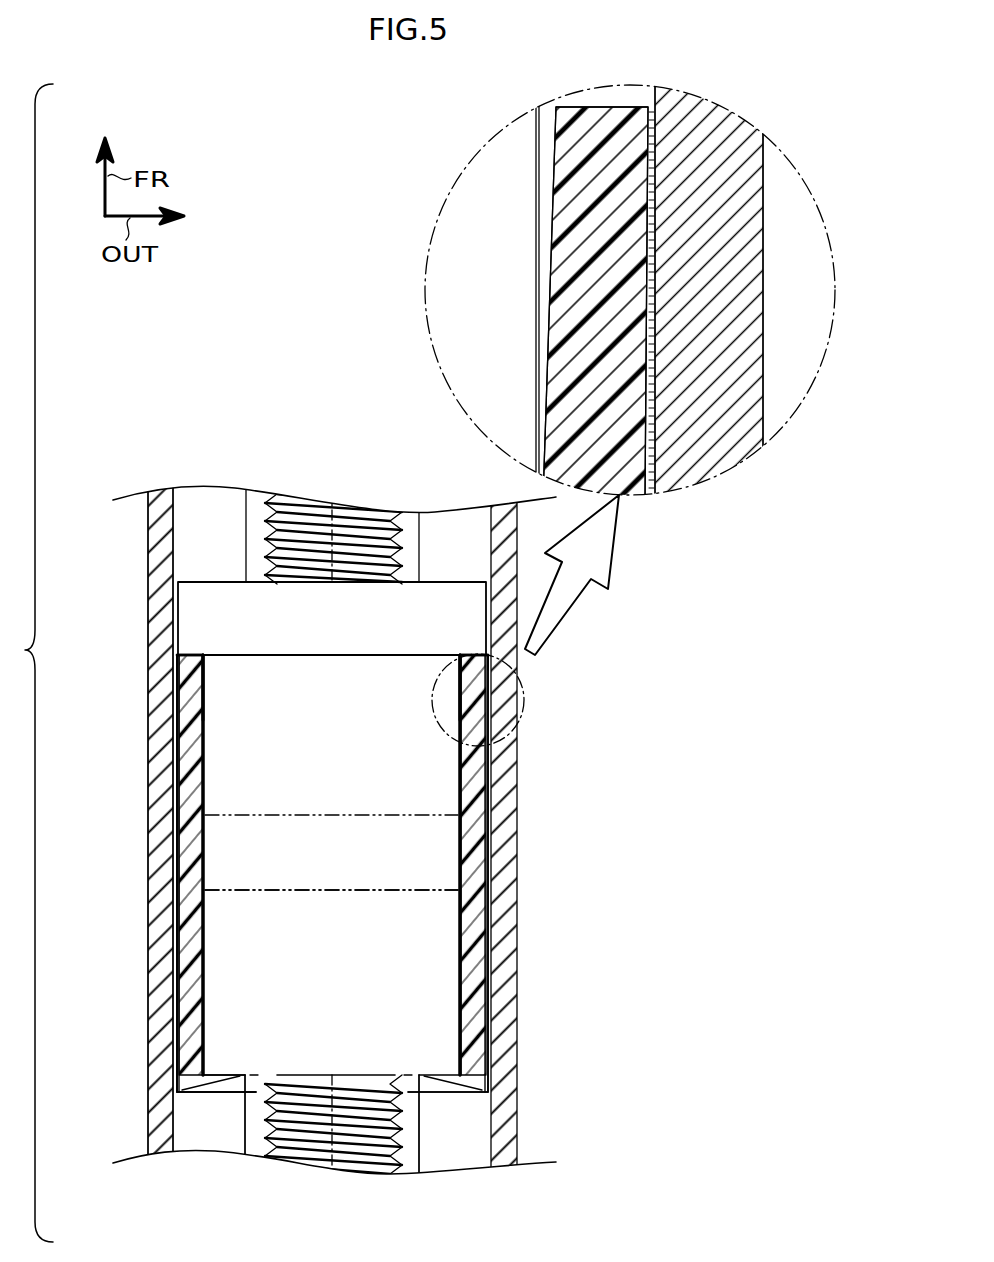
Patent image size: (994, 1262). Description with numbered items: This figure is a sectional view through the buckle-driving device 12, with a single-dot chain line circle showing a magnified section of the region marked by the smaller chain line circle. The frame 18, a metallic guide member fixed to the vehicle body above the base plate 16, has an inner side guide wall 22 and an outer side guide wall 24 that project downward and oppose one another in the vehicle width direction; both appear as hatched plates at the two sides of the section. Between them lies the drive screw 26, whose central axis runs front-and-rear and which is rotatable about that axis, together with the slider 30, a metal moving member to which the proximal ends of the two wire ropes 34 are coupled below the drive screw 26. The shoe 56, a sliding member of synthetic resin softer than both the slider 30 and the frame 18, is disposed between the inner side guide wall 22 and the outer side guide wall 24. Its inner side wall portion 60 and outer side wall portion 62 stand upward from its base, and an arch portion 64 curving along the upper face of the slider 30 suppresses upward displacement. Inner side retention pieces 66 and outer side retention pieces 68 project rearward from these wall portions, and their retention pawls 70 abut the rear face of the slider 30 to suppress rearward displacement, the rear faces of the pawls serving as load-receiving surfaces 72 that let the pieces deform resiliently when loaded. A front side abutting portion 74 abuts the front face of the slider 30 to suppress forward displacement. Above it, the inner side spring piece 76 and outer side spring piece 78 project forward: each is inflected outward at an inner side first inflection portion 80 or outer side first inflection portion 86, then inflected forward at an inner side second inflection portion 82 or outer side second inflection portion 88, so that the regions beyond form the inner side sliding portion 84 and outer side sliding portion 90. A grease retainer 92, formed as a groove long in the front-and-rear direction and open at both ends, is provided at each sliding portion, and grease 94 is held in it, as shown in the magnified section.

The buckle-driving device 12 is at (482, 733).
The base plate 16 is at (427, 1164).
The frame 18 is at (482, 733).
The inner side guide wall 22 is at (503, 1040).
The outer side guide wall 24 is at (170, 1040).
The drive screw 26 is at (360, 1152).
The slider 30 is at (428, 945).
The wire rope 34 is at (245, 1142).
The shoe 56 is at (178, 1062).
The inner side wall portion 60 is at (473, 857).
The outer side wall portion 62 is at (193, 855).
The arch portion 64 is at (331, 905).
The inner side retention piece 66 is at (470, 1000).
The outer side retention piece 68 is at (195, 1000).
The retention pawl 70 is at (231, 1072).
The load-receiving surface 72 is at (231, 1093).
The front side abutting portion 74 is at (328, 656).
The inner side spring piece 76 is at (473, 802).
The outer side spring piece 78 is at (197, 802).
The inner side first inflection portion 80 is at (490, 773).
The inner side second inflection portion 82 is at (490, 740).
The inner side sliding portion 84 is at (462, 690).
The outer side first inflection portion 86 is at (181, 773).
The outer side second inflection portion 88 is at (175, 740).
The outer side sliding portion 90 is at (205, 690).
The grease retainer 92 is at (180, 668).
The grease 94 is at (176, 683).